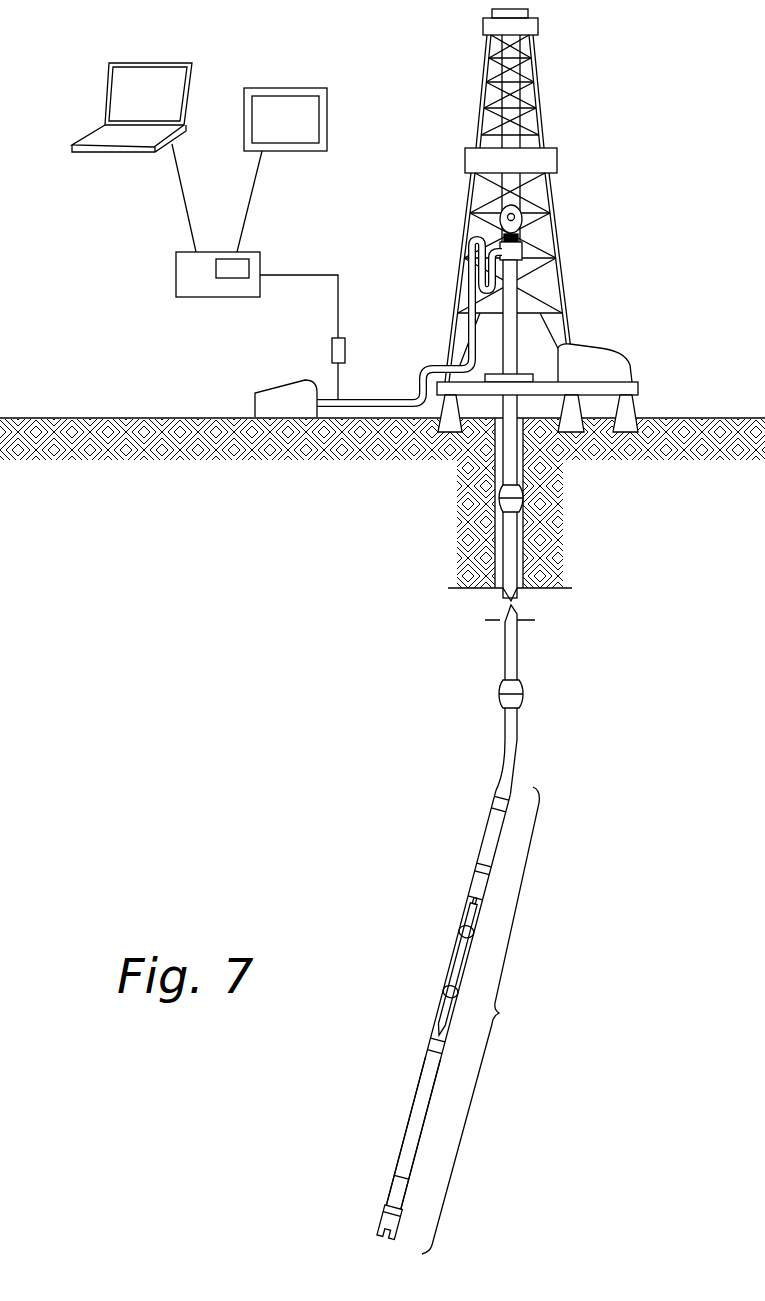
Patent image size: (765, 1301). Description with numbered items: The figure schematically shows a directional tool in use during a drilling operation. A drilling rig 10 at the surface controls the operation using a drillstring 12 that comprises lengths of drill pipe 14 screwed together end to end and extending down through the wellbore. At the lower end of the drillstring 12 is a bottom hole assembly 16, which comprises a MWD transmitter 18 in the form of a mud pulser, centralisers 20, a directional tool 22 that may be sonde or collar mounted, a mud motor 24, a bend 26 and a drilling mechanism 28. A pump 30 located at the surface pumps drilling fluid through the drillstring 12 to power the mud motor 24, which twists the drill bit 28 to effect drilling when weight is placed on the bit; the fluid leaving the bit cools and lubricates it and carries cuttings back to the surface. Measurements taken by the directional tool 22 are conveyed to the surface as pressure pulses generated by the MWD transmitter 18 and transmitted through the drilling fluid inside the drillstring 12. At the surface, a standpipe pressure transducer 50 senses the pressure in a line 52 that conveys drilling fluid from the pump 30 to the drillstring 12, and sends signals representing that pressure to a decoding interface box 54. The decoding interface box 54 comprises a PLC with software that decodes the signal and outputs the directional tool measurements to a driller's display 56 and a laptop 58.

The drilling rig 10 is at (549, 120).
The drillstring 12 is at (503, 657).
The drill pipe 14 is at (497, 777).
The bottom hole assembly 16 is at (462, 1020).
The MWD transmitter 18 is at (474, 885).
The centralisers 20 is at (462, 934).
The directional tool 22 is at (467, 907).
The mud motor 24 is at (405, 1137).
The bend 26 is at (437, 1047).
The drilling mechanism 28 is at (372, 1219).
The pump 30 is at (272, 388).
The standpipe pressure transducer 50 is at (330, 352).
The line 52 is at (392, 397).
The decoding interface box 54 is at (176, 278).
The driller's display 56 is at (330, 113).
The laptop 58 is at (108, 96).